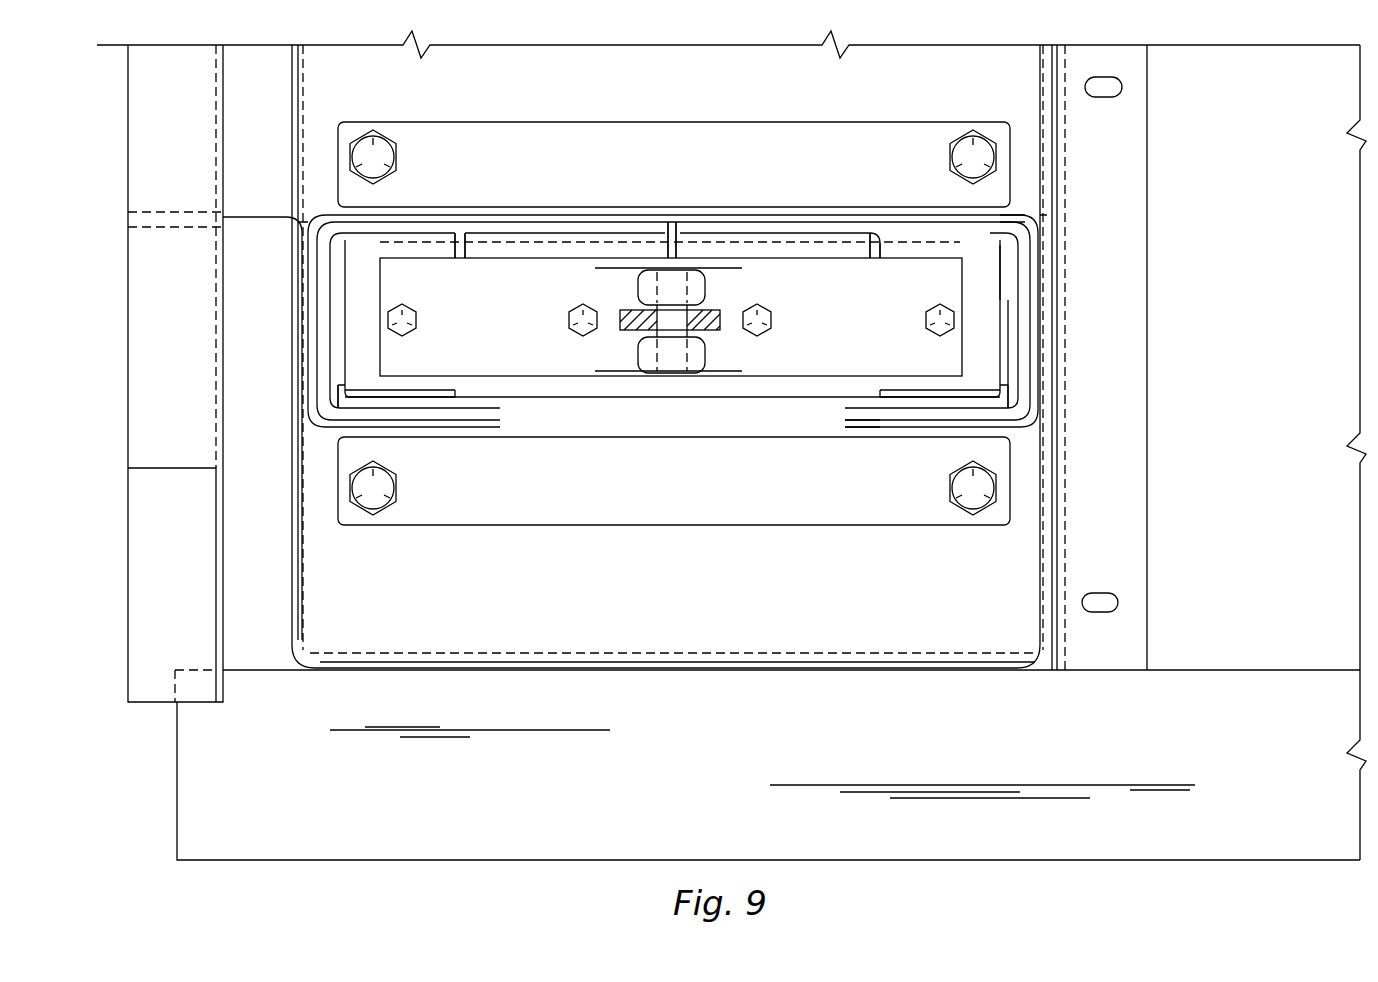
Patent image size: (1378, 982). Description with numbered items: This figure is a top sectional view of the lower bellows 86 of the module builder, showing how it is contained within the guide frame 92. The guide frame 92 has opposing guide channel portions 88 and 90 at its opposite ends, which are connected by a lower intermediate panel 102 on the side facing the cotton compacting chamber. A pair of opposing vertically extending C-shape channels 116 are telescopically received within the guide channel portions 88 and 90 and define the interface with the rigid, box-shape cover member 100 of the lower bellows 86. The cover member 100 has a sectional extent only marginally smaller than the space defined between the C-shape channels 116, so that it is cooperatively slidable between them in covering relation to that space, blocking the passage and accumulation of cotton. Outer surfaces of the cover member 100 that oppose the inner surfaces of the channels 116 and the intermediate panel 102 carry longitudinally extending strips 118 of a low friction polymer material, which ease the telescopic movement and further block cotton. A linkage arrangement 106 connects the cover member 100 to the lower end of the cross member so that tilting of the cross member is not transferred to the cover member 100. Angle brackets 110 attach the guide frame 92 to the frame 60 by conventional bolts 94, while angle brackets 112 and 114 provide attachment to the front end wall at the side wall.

The frame 60 is at (1197, 672).
The lower bellows 86 is at (905, 440).
The guide channel portion 88 is at (306, 352).
The guide channel portion 90 is at (1040, 327).
The guide frame 92 is at (1032, 430).
The bolts 94 is at (392, 140).
The cover member 100 is at (1010, 295).
The lower intermediate panel 102 is at (790, 215).
The linkage arrangement 106 is at (722, 312).
The angle brackets 110 is at (677, 122).
The angle bracket 112 is at (264, 232).
The angle bracket 114 is at (1055, 558).
The C-shape channels 116 is at (300, 222).
The strips 118 is at (335, 238).